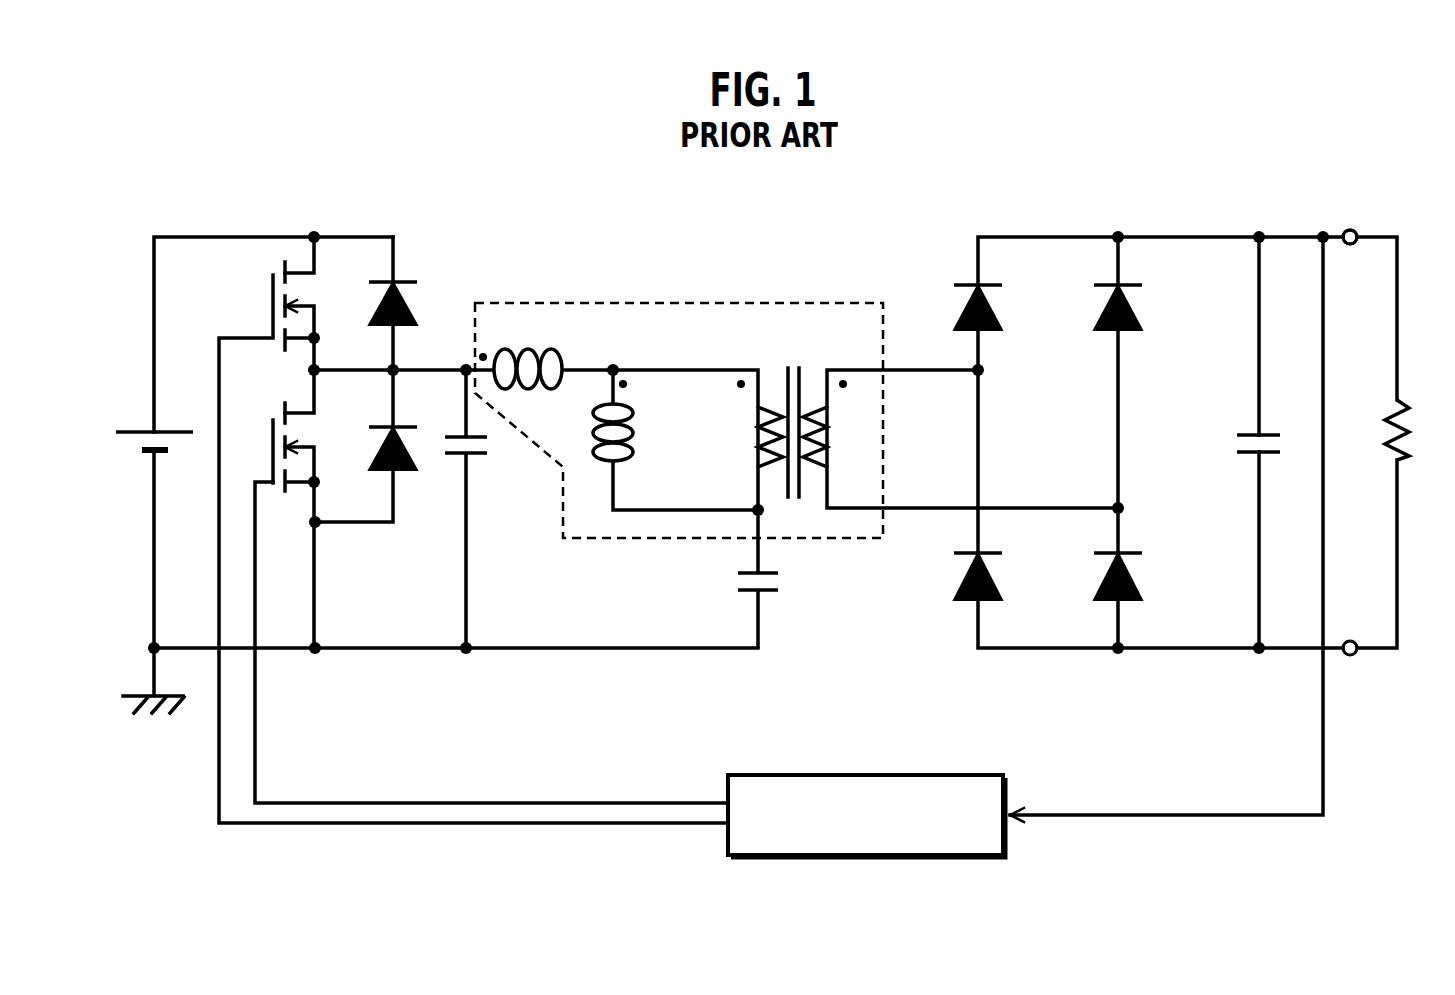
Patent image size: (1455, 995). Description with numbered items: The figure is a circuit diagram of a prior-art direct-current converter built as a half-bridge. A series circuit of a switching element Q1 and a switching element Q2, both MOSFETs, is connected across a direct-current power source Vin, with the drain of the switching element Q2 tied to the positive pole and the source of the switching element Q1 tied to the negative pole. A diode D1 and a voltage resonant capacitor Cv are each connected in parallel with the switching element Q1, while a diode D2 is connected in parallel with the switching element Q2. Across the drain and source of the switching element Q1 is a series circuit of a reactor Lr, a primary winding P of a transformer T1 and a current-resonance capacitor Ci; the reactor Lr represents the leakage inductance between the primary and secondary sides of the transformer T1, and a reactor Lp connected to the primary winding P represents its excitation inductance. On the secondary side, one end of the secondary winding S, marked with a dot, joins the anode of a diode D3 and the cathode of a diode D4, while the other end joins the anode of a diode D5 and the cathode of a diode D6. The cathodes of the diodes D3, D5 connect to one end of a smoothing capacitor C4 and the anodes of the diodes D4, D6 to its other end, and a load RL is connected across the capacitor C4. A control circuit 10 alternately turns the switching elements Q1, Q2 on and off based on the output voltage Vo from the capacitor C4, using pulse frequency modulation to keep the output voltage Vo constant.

The control circuit 10 is at (820, 775).
The direct-current power source Vin is at (143, 453).
The switching element Q1 is at (271, 447).
The switching element Q2 is at (271, 306).
The diode D1 is at (377, 448).
The diode D2 is at (377, 301).
The voltage resonant capacitor Cv is at (482, 509).
The reactor Lr is at (553, 349).
The reactor Lp is at (657, 440).
The transformer T1 is at (865, 422).
The primary winding P is at (745, 437).
The secondary winding S is at (837, 437).
The current-resonance capacitor Ci is at (741, 579).
The diode D3 is at (963, 307).
The diode D4 is at (963, 576).
The diode D5 is at (1102, 307).
The diode D6 is at (1102, 576).
The smoothing capacitor C4 is at (1239, 447).
The load RL is at (1412, 430).
The output voltage Vo is at (1326, 231).